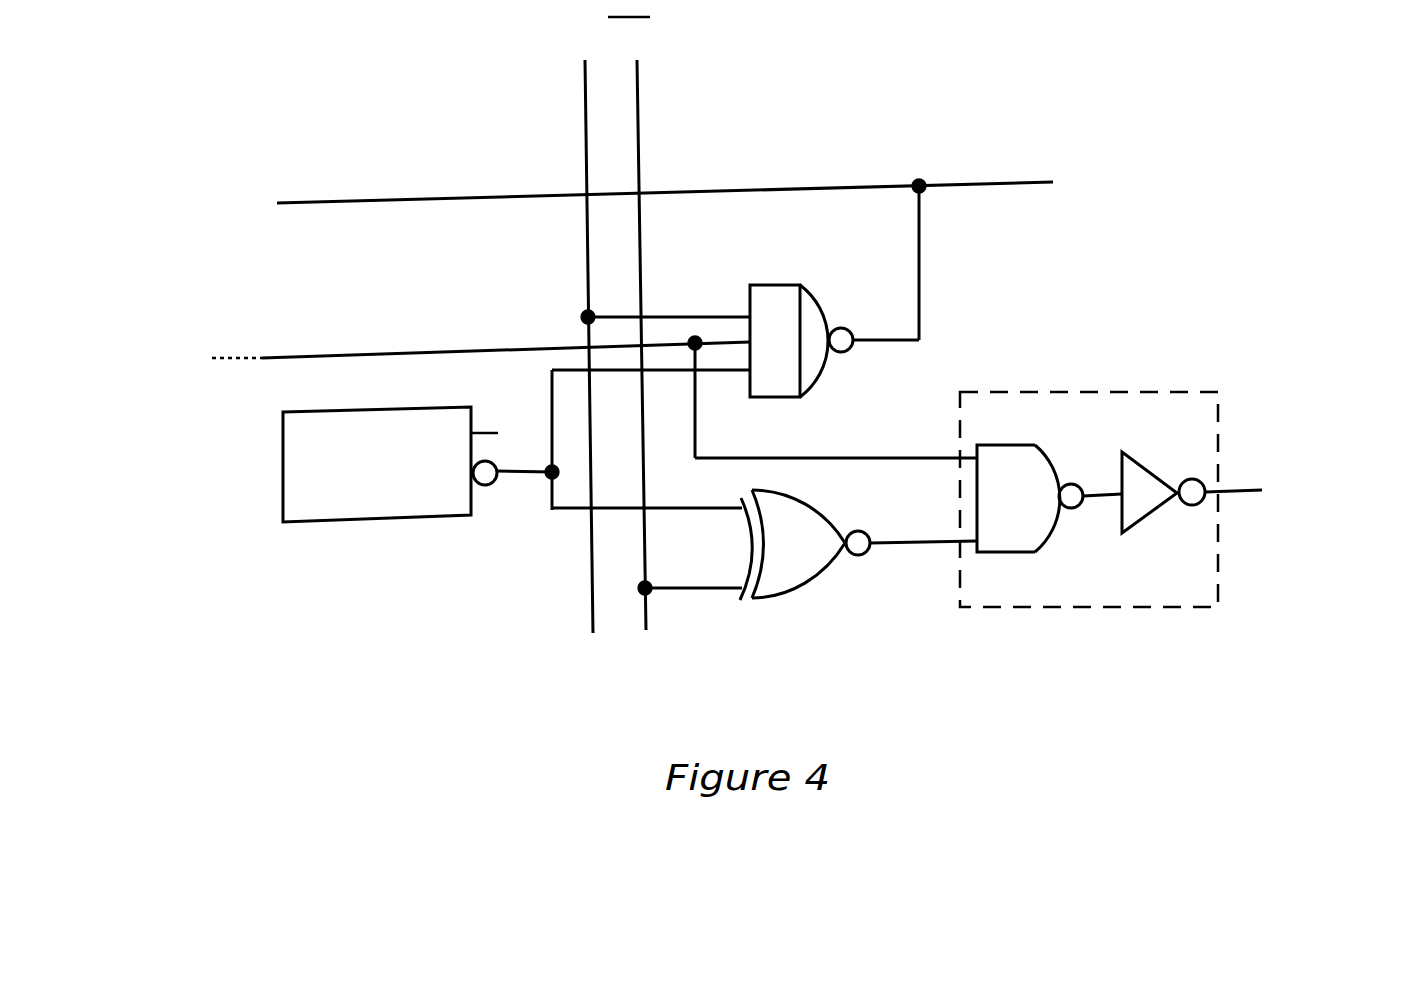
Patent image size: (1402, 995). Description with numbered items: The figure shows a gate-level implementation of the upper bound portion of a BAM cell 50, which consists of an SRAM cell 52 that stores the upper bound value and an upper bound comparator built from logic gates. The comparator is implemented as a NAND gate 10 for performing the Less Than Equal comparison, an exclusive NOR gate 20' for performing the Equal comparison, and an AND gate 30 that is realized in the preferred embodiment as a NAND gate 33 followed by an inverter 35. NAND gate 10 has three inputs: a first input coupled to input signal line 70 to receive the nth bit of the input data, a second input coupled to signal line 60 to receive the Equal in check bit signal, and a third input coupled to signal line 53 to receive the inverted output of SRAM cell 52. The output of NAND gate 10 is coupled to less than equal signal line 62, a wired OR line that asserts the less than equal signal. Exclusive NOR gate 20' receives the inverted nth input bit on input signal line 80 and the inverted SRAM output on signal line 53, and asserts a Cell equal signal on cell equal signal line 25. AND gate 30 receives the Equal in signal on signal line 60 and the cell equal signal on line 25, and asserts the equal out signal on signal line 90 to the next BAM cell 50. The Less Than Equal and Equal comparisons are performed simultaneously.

The NAND gate 10 is at (790, 366).
The exclusive NOR gate 20' is at (754, 545).
The cell equal signal line 25 is at (905, 543).
The AND gate 30 is at (1148, 391).
The NAND gate 33 is at (1025, 529).
The inverter 35 is at (1152, 504).
The BAM cell 50 is at (286, 720).
The SRAM cell 52 is at (395, 513).
The signal line 53 is at (619, 486).
The signal line 60 is at (335, 350).
The less than equal signal line 62 is at (750, 182).
The input signal line 70 is at (572, 106).
The input signal line 80 is at (641, 103).
The signal line 90 is at (1232, 500).